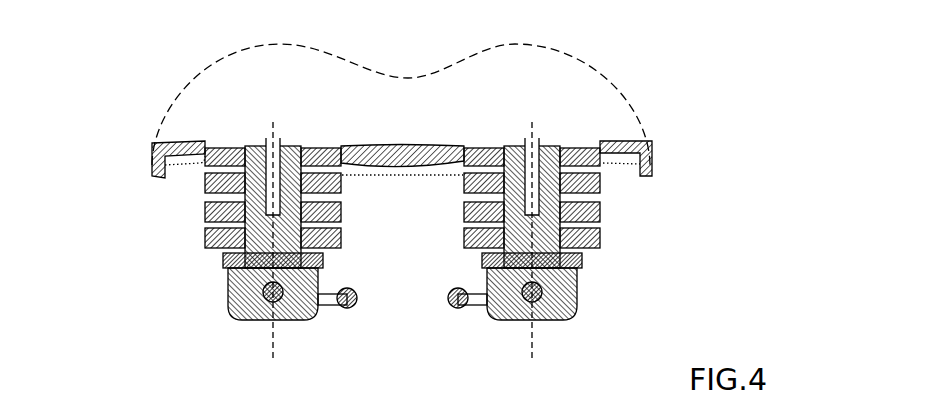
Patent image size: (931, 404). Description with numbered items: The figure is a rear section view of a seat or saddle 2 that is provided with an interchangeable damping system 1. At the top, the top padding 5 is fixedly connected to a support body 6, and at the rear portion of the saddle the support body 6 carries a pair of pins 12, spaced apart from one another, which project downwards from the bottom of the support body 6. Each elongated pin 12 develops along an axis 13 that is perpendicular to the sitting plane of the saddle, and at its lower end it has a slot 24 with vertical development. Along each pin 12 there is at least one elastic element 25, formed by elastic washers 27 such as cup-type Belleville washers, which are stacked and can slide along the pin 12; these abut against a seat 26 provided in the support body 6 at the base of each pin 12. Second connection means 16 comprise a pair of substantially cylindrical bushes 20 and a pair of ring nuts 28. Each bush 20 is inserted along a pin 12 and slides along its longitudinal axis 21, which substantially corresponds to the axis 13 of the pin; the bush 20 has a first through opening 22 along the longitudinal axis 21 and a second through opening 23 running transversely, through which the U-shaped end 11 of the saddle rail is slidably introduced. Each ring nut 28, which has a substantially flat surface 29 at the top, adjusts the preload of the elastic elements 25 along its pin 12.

The interchangeable damping system 1 is at (116, 251).
The seat or saddle 2 is at (652, 100).
The top padding 5 is at (609, 77).
The support body 6 is at (650, 167).
The U-shaped portion 11 is at (402, 248).
The pin 12 is at (276, 140).
The axis 13 is at (411, 258).
The second connection means 16 is at (204, 317).
The bush 20 is at (400, 276).
The longitudinal axis 21 is at (272, 344).
The first through opening 22 is at (235, 316).
The second through opening 23 is at (228, 297).
The slot 24 is at (228, 271).
The elastic element 25 is at (205, 245).
The seat 26 is at (407, 131).
The elastic washer 27 is at (407, 201).
The ring nut 28 is at (322, 258).
The flat surface 29 is at (477, 252).